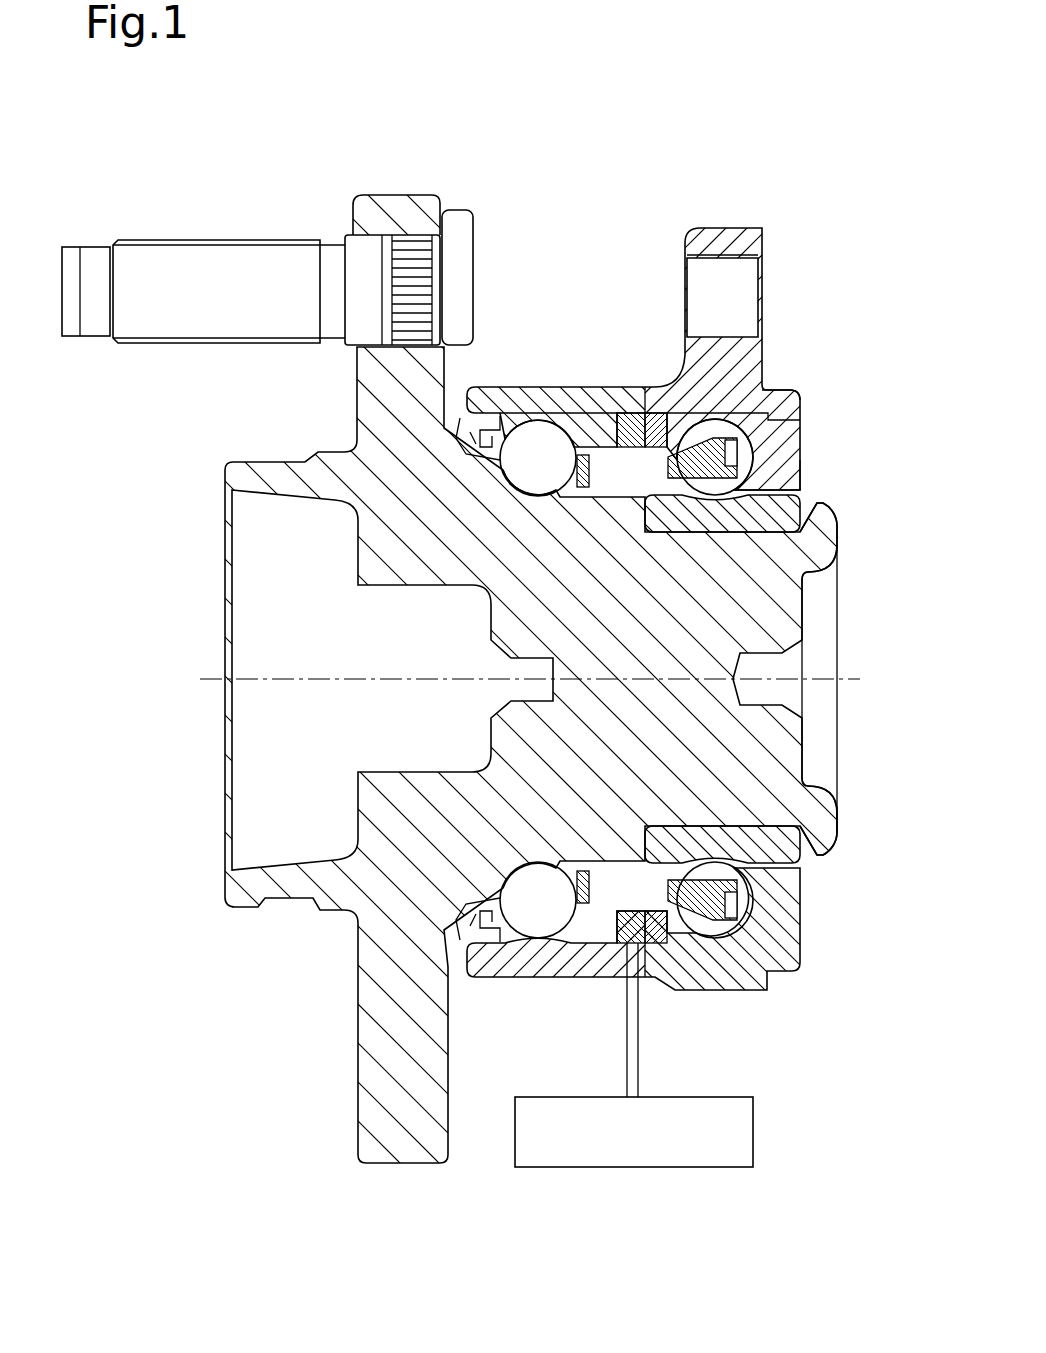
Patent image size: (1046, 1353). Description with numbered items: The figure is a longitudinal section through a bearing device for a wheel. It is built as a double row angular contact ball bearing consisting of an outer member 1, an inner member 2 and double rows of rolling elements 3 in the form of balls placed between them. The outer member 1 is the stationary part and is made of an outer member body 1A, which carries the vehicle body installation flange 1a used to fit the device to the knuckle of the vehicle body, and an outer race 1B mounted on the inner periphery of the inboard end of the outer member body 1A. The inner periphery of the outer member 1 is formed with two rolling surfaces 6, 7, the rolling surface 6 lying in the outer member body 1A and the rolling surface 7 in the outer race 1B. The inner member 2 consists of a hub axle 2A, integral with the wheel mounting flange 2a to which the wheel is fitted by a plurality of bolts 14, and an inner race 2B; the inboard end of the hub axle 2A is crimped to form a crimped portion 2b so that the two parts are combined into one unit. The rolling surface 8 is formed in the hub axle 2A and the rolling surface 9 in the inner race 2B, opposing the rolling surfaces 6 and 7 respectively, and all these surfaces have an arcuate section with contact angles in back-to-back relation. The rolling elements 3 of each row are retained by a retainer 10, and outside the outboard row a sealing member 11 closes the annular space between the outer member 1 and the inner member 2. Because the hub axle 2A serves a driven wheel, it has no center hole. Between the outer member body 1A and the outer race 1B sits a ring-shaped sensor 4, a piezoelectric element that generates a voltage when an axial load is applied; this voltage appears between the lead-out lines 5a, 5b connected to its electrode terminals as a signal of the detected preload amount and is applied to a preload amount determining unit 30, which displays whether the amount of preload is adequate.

The outer member 1 is at (673, 607).
The outer member body 1A is at (555, 397).
The outer race 1B is at (660, 400).
The vehicle body installation flange 1a is at (725, 228).
The inner member 2 is at (498, 676).
The hub axle 2A is at (395, 527).
The inner race 2B is at (690, 505).
The wheel mounting flange 2a is at (398, 193).
The crimped portion 2b is at (822, 530).
The rolling elements 3 is at (531, 445).
The sensor 4 is at (628, 425).
The lead-out line 5a is at (638, 1000).
The lead-out line 5b is at (633, 1025).
The rolling surface 6 is at (572, 410).
The rolling surface 7 is at (735, 397).
The rolling surface 8 is at (498, 466).
The rolling surface 9 is at (760, 477).
The retainer 10 is at (604, 430).
The sealing member 11 is at (455, 420).
The bolt 14 is at (243, 245).
The preload amount determining unit 30 is at (753, 1155).